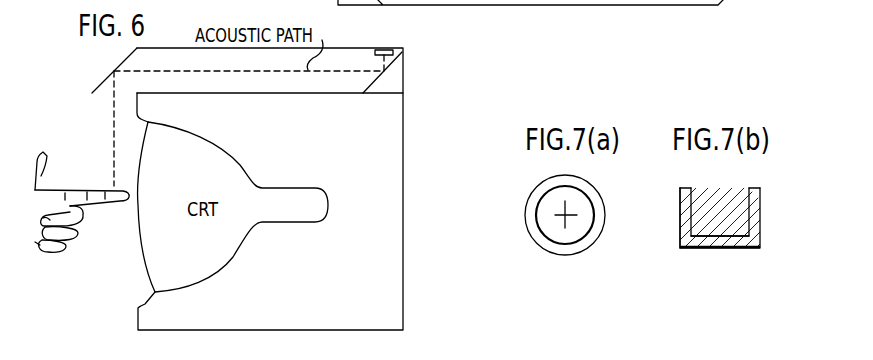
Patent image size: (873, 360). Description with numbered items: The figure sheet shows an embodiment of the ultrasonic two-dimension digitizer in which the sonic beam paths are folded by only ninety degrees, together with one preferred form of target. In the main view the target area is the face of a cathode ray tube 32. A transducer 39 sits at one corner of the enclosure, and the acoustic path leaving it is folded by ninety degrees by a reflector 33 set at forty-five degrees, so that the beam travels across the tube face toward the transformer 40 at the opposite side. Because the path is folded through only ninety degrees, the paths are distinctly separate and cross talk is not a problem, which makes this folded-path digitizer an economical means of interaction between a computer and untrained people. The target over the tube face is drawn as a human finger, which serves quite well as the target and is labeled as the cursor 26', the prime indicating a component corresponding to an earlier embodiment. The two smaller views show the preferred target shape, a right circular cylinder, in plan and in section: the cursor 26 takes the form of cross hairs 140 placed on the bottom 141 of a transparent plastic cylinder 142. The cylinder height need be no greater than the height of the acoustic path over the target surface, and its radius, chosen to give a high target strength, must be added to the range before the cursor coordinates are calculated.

In FIG. 6, the cathode ray tube 32 is at (146, 270).
In FIG. 6, the 45 degree reflector 33 is at (103, 75).
In FIG. 6, the transformer 40 is at (395, 83).
In FIG. 6, the transducer 39 is at (393, 49).
In FIG. 6, the cursor 26' is at (82, 202).
In FIG. 7A, the cursor 26 is at (563, 229).
In FIG. 7B, the cursor 26 is at (729, 239).
In FIG. 7A, the cross hairs 140 is at (560, 213).
In FIG. 7B, the cross hairs 140 is at (730, 248).
In FIG. 7B, the bottom 141 is at (693, 248).
In FIG. 7B, the transparent plastic cylinder 142 is at (680, 207).